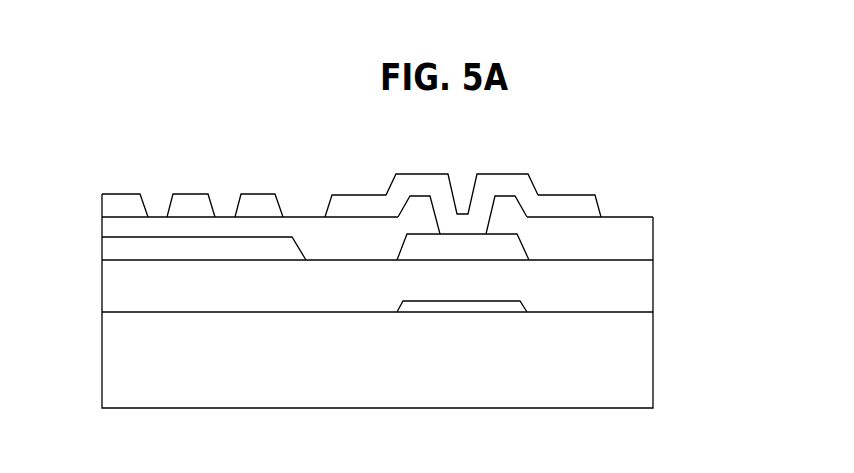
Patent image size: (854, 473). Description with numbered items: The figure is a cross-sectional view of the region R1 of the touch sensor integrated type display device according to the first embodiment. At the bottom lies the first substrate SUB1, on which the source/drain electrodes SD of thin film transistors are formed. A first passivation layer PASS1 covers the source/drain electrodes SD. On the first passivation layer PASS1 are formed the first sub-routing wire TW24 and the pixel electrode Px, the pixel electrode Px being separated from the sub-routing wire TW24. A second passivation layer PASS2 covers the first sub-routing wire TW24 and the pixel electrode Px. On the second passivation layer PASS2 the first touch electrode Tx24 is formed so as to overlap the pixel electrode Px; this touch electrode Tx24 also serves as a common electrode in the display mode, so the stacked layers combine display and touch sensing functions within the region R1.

The region R1 is at (136, 154).
The pixel electrode Px is at (108, 249).
The first sub-routing wire TW24 is at (412, 246).
The first touch electrode Tx24 is at (573, 202).
The second passivation layer PASS2 is at (647, 242).
The first passivation layer PASS1 is at (647, 291).
The first substrate SUB1 is at (647, 358).
The source/drain electrodes SD is at (460, 308).